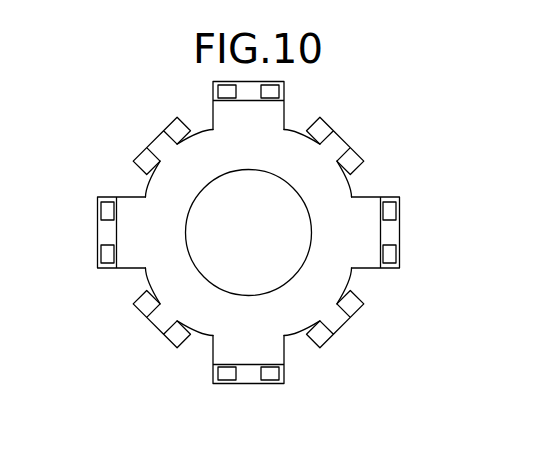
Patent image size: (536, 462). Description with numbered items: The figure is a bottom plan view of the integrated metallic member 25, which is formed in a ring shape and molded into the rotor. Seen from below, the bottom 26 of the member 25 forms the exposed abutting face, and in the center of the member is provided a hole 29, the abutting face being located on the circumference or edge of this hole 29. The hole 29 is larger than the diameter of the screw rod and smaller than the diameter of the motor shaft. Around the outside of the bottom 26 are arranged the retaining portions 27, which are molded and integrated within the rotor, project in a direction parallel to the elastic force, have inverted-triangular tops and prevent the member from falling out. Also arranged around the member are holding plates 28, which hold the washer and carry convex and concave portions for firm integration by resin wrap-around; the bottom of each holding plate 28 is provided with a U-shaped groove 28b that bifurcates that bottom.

The integrated metallic member 25 is at (452, 163).
The bottom 26 is at (290, 162).
The retaining portion 27 is at (352, 147).
The holding plate 28 is at (400, 231).
The U-shaped groove 28b is at (248, 375).
The hole 29 is at (182, 234).